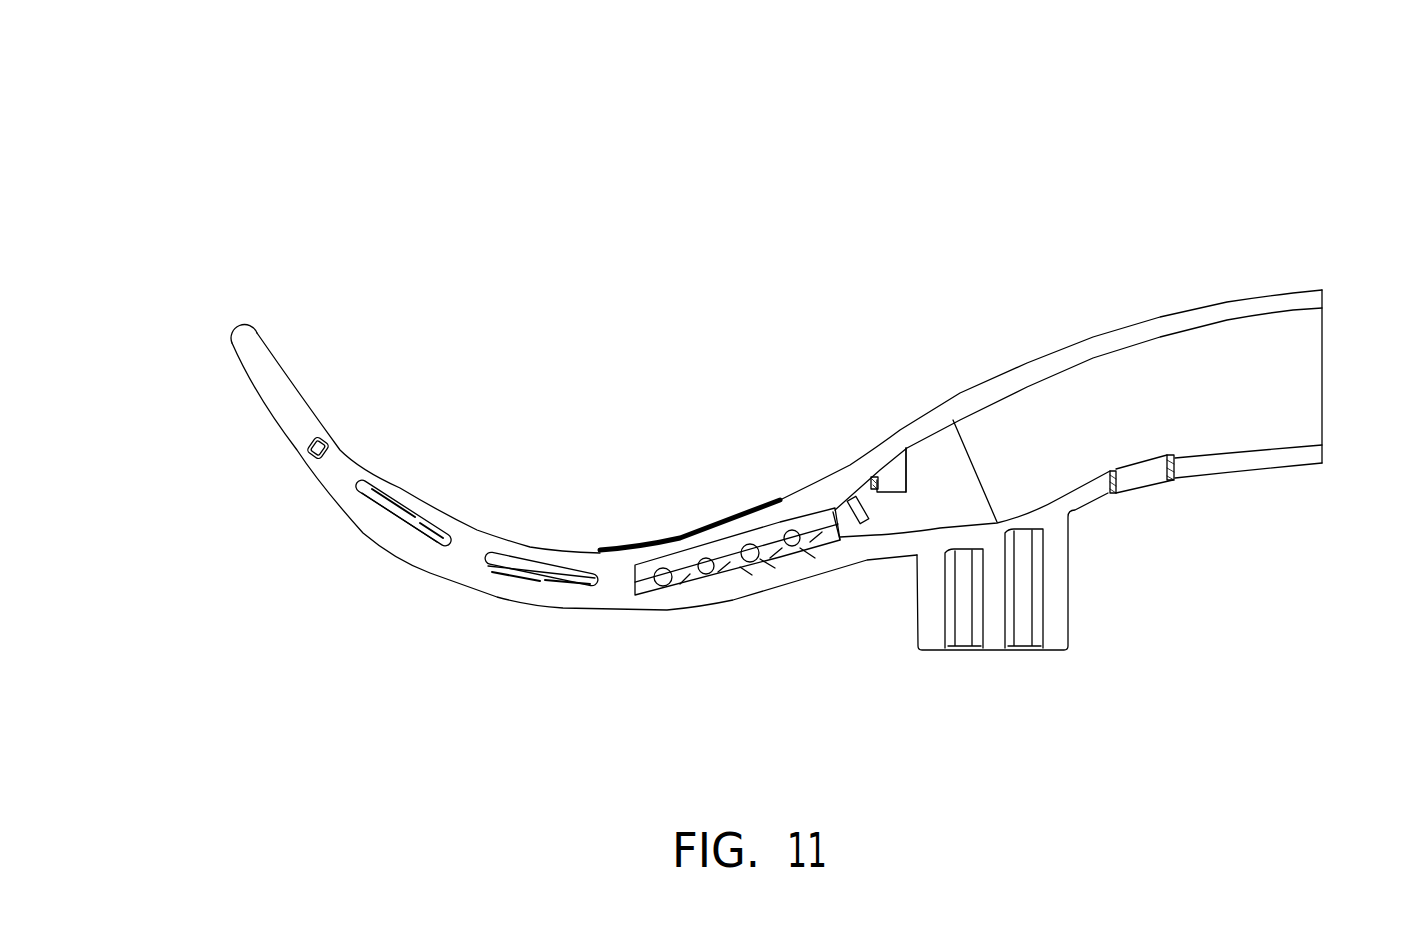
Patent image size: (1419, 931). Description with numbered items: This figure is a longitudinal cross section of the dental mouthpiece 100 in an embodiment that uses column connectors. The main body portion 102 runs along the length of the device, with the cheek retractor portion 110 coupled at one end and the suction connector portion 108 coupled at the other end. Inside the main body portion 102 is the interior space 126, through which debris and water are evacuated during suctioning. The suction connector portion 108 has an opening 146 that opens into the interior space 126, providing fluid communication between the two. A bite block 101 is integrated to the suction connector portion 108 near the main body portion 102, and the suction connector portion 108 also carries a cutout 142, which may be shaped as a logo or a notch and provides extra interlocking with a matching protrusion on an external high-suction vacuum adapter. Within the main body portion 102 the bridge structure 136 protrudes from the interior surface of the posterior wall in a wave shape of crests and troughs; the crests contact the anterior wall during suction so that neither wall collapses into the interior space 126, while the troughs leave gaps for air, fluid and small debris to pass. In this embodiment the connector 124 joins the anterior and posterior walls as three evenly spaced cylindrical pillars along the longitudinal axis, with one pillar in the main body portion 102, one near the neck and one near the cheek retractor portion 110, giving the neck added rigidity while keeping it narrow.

The dental mouthpiece 100 is at (362, 96).
The main body portion 102 is at (613, 387).
The cheek retractor portion 110 is at (243, 322).
The connector 124 is at (337, 473).
The interior space 126 is at (669, 552).
The bridge structure 136 is at (718, 562).
The opening 146 is at (945, 483).
The cutout 142 is at (1137, 482).
The suction connector portion 108 is at (1268, 467).
The bite block 101 is at (1063, 637).